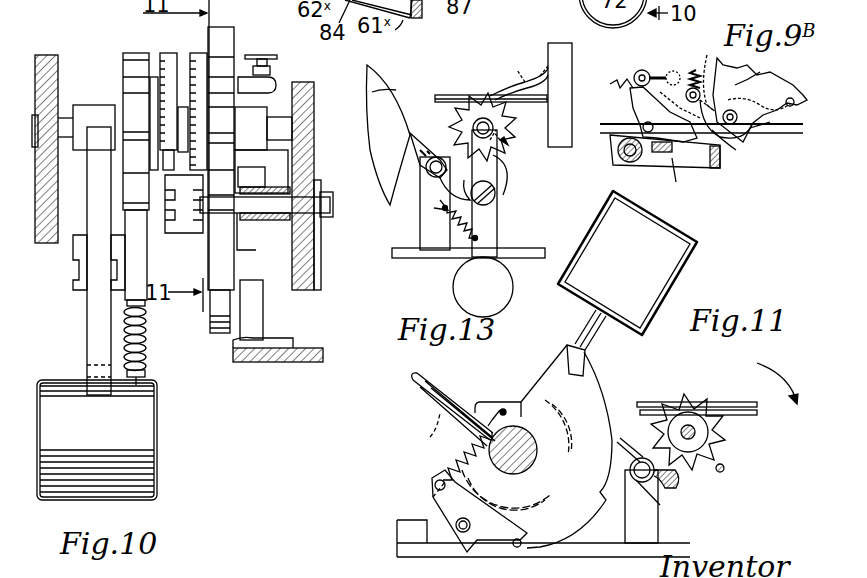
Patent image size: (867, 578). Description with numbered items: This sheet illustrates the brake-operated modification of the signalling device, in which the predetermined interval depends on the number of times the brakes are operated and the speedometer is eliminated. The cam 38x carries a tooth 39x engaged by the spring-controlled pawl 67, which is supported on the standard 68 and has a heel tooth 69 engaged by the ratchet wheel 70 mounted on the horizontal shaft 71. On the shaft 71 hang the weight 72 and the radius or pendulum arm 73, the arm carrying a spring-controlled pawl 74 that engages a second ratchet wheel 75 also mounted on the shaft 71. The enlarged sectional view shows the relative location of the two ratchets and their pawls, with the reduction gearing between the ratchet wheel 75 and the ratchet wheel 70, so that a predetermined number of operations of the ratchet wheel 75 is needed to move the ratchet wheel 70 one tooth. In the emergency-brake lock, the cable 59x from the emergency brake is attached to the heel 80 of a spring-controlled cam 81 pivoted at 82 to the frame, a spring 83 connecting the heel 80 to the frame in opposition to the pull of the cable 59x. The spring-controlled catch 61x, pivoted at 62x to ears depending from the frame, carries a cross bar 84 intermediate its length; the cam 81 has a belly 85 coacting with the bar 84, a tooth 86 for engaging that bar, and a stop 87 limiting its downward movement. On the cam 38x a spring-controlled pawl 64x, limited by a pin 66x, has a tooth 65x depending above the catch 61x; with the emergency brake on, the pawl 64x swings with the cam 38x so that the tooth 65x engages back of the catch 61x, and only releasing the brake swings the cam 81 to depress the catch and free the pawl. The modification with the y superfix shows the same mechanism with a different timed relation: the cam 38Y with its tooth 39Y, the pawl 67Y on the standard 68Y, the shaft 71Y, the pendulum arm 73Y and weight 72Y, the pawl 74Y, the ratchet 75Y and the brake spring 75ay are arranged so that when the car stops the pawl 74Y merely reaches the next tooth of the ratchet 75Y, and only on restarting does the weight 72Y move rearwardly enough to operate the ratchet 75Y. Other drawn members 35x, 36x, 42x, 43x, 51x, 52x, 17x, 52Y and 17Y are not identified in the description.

In FIG. 10, the horizontal shaft 71 is at (66, 117).
In FIG. 11, the horizontal shaft 71 is at (692, 428).
In FIG. 10, the radius or pendulum arm 73 is at (90, 330).
In FIG. 10, the weight 72 is at (140, 458).
In FIG. 10, the ratchet wheel 75 is at (135, 53).
In FIG. 10, the spring-controlled pawl 74 is at (130, 242).
In FIG. 10, the cam 38x is at (207, 40).
In FIG. 9B, the cam 38x is at (760, 72).
In FIG. 11, the cam 38x is at (543, 446).
In FIG. 10, the ratchet wheel 70 is at (230, 58).
In FIG. 11, the ratchet wheel 70 is at (720, 436).
In FIG. 10, the bar 52x is at (280, 68).
In FIG. 11, the bar 52x is at (663, 404).
In FIG. 10, the standard 68 is at (252, 316).
In FIG. 11, the standard 68 is at (648, 524).
In FIG. 10, the base 17x is at (323, 356).
In FIG. 11, the base 17x is at (410, 548).
In FIG. 13, the cam 38Y is at (396, 133).
In FIG. 13, the tooth 39Y is at (385, 90).
In FIG. 13, the bar 52Y is at (449, 95).
In FIG. 13, the back lash or brake spring 75ay is at (527, 68).
In FIG. 13, the horizontal shaft 71Y is at (520, 116).
In FIG. 13, the spring-controlled pawl 67Y is at (418, 150).
In FIG. 13, the pendulum arm 73Y is at (480, 223).
In FIG. 13, the ratchet 75Y is at (512, 142).
In FIG. 13, the pawl 74Y is at (508, 180).
In FIG. 13, the standard 68Y is at (428, 228).
In FIG. 13, the base 17Y is at (395, 256).
In FIG. 13, the pendulum weight 72Y is at (470, 277).
In FIG. 9B, the spring-controlled catch 61x is at (708, 168).
In FIG. 9B, the pivot 62x is at (622, 162).
In FIG. 9B, the tooth 86 is at (664, 160).
In FIG. 9B, the cross bar 84 is at (676, 182).
In FIG. 9B, the spring 83 is at (613, 84).
In FIG. 9B, the heel 80 is at (632, 97).
In FIG. 9B, the spring-controlled cam 81 is at (667, 97).
In FIG. 9B, the pivot 82 is at (642, 125).
In FIG. 9B, the cable 59x is at (701, 74).
In FIG. 9B, the stop 87 is at (723, 84).
In FIG. 9B, the spring-controlled pawl 64x is at (770, 100).
In FIG. 9B, the pin 66x is at (785, 106).
In FIG. 9B, the tooth 65x is at (750, 120).
In FIG. 9B, the belly 85 is at (724, 133).
In FIG. 11, the pedal 42x is at (680, 248).
In FIG. 11, the stem 43x is at (597, 352).
In FIG. 11, the tooth 39x is at (607, 487).
In FIG. 11, the spring-controlled pawl 67 is at (623, 453).
In FIG. 11, the bracket 36x is at (520, 402).
In FIG. 11, the lever 35x is at (432, 418).
In FIG. 11, the bar 51x is at (690, 400).
In FIG. 11, the heel tooth 69 is at (678, 483).